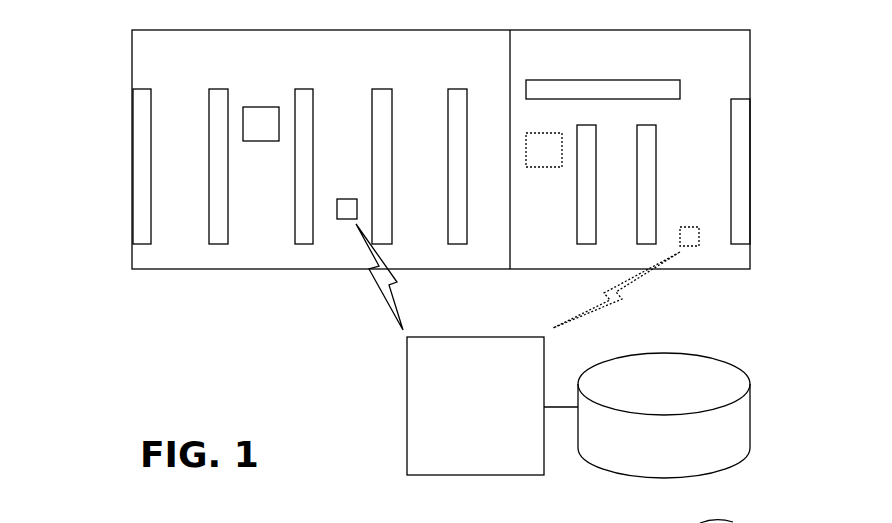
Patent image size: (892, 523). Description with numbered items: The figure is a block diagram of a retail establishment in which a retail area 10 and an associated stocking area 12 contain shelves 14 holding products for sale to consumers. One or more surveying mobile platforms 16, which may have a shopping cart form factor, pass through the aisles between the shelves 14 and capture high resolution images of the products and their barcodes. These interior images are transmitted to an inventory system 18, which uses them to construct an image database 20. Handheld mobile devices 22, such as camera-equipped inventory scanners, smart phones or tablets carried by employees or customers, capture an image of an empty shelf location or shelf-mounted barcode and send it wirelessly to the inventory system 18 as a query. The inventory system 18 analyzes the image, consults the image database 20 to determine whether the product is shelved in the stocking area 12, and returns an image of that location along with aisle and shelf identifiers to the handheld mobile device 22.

The retail area 10 is at (132, 57).
The stocking area 12 is at (718, 270).
The shelves 14 is at (219, 89).
The surveying mobile platform 16 is at (262, 141).
The inventory system 18 is at (407, 430).
The image database 20 is at (750, 405).
The handheld mobile device 22 is at (347, 199).